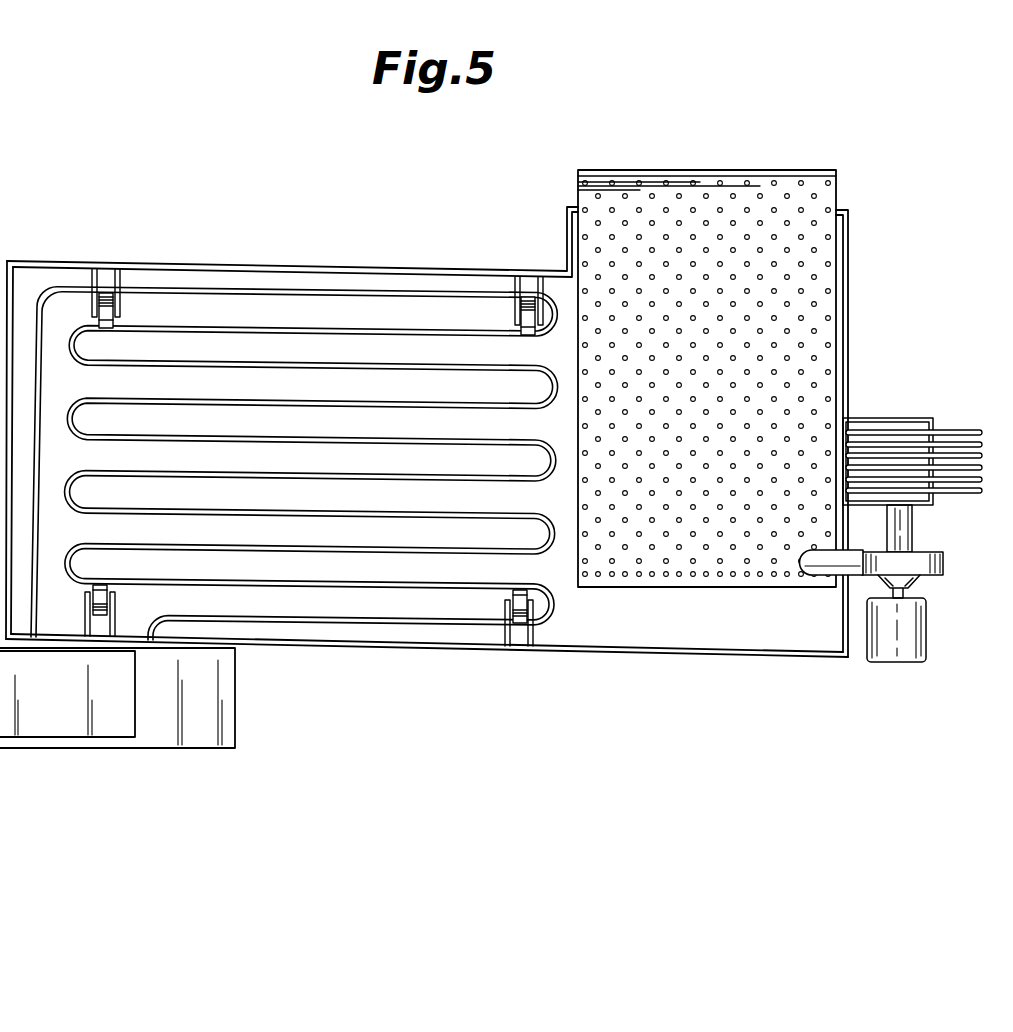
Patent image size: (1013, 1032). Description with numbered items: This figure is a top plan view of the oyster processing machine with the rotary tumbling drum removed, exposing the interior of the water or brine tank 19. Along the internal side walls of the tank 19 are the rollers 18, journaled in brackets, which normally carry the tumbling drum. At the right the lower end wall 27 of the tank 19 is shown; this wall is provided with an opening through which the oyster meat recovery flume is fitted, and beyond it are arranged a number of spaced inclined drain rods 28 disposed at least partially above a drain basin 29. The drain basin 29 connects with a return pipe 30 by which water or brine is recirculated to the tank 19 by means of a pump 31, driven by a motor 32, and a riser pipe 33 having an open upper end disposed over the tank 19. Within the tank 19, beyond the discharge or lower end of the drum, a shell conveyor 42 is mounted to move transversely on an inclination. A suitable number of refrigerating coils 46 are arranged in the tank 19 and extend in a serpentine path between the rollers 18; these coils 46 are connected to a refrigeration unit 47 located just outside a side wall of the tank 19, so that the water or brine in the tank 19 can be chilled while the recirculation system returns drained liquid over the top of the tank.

The rollers 18 is at (117, 317).
The water or brine tank 19 is at (557, 656).
The lower end wall 27 is at (848, 272).
The drain rods 28 is at (953, 442).
The drain basin 29 is at (890, 418).
The return pipe 30 is at (912, 528).
The pump 31 is at (943, 566).
The motor 32 is at (926, 638).
The riser pipe 33 is at (846, 556).
The shell conveyor 42 is at (717, 190).
The refrigerating coils 46 is at (417, 533).
The refrigeration unit 47 is at (217, 700).